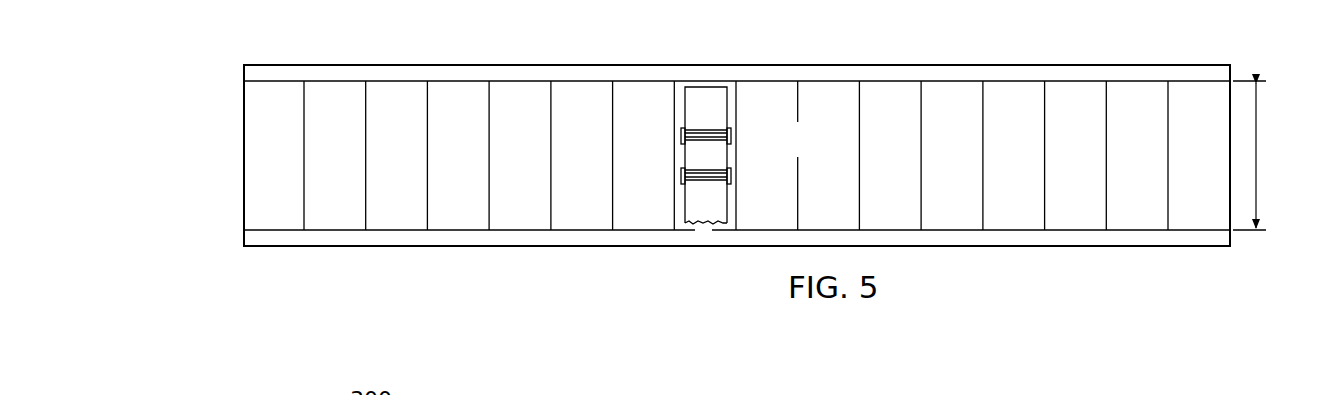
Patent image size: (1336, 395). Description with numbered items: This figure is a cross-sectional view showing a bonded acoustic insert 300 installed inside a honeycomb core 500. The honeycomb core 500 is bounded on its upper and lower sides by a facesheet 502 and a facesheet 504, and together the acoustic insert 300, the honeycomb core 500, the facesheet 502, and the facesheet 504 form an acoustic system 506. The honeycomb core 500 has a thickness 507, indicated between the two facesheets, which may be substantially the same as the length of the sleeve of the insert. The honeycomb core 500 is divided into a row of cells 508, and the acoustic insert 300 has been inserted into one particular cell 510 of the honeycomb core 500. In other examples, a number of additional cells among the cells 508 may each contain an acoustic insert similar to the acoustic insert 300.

The honeycomb core 500 is at (262, 128).
The facesheet 502 is at (1201, 75).
The facesheet 504 is at (1200, 237).
The acoustic system 506 is at (222, 165).
The thickness 507 is at (1256, 160).
The cells 508 is at (1024, 220).
The cell 510 is at (703, 232).
The acoustic insert 300 is at (735, 152).